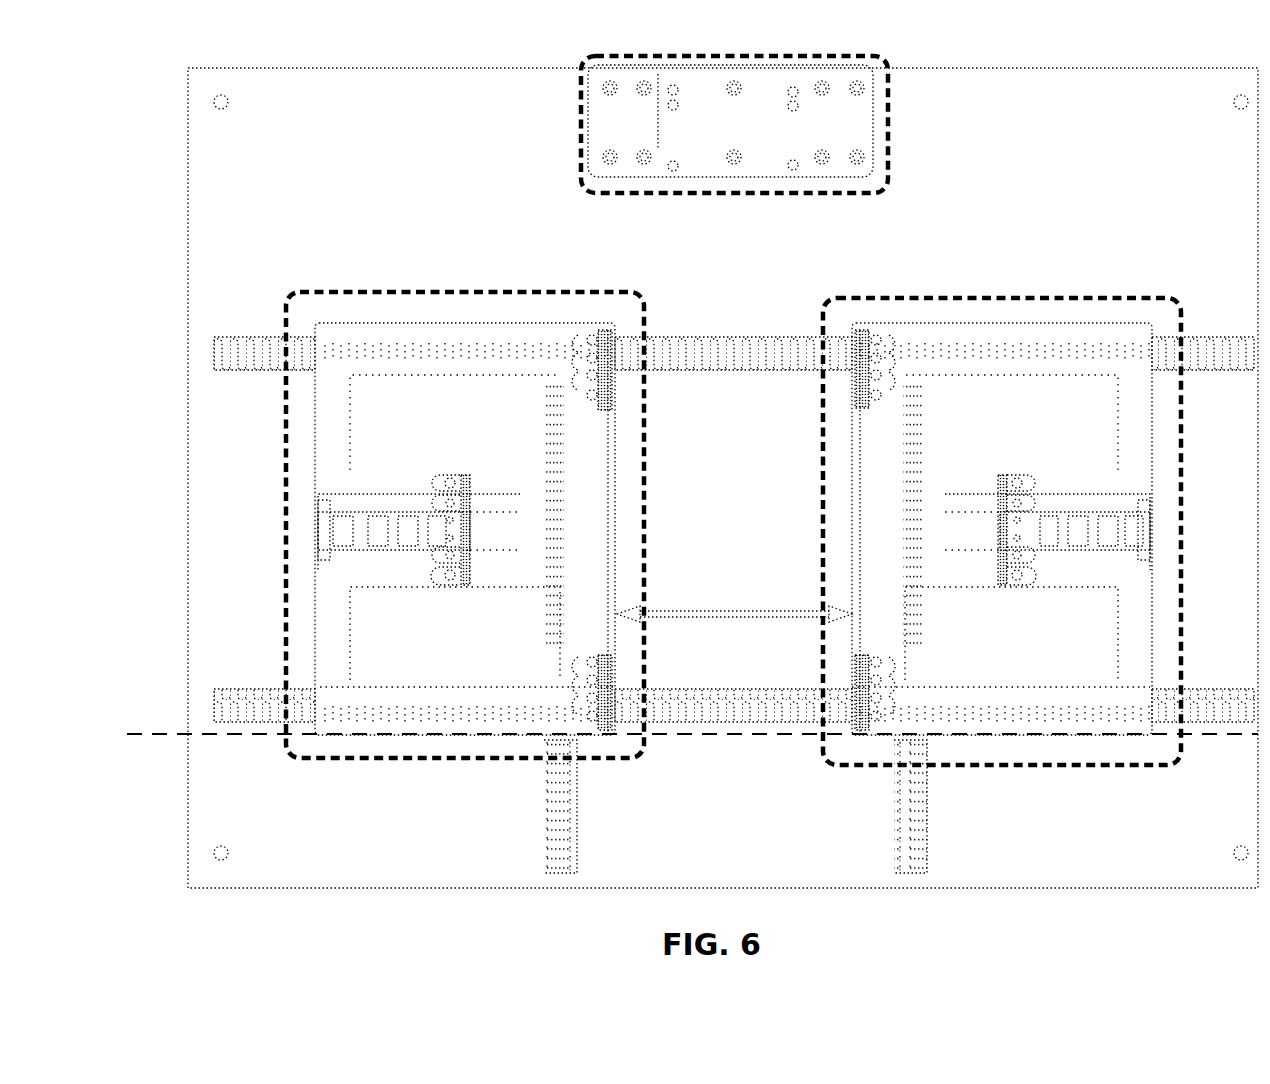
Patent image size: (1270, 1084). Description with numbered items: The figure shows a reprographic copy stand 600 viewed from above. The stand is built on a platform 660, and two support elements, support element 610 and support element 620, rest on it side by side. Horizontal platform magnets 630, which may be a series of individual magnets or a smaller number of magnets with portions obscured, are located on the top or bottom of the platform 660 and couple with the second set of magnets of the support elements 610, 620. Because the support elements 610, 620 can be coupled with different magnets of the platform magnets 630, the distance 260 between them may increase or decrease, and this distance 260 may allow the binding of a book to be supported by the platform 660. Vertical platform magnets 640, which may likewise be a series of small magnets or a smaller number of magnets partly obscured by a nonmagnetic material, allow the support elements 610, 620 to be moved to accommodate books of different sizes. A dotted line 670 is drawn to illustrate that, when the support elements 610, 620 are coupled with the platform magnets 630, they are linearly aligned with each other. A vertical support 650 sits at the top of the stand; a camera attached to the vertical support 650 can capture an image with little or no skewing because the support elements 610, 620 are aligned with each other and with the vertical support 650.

The reprographic copy stand 600 is at (148, 122).
The support element 610 is at (512, 291).
The support element 620 is at (1048, 297).
The horizontal platform magnets 630 is at (236, 350).
The vertical platform magnets 640 is at (545, 832).
The vertical support 650 is at (580, 120).
The platform 660 is at (188, 804).
The dotted line 670 is at (158, 733).
The distance 260 is at (713, 610).